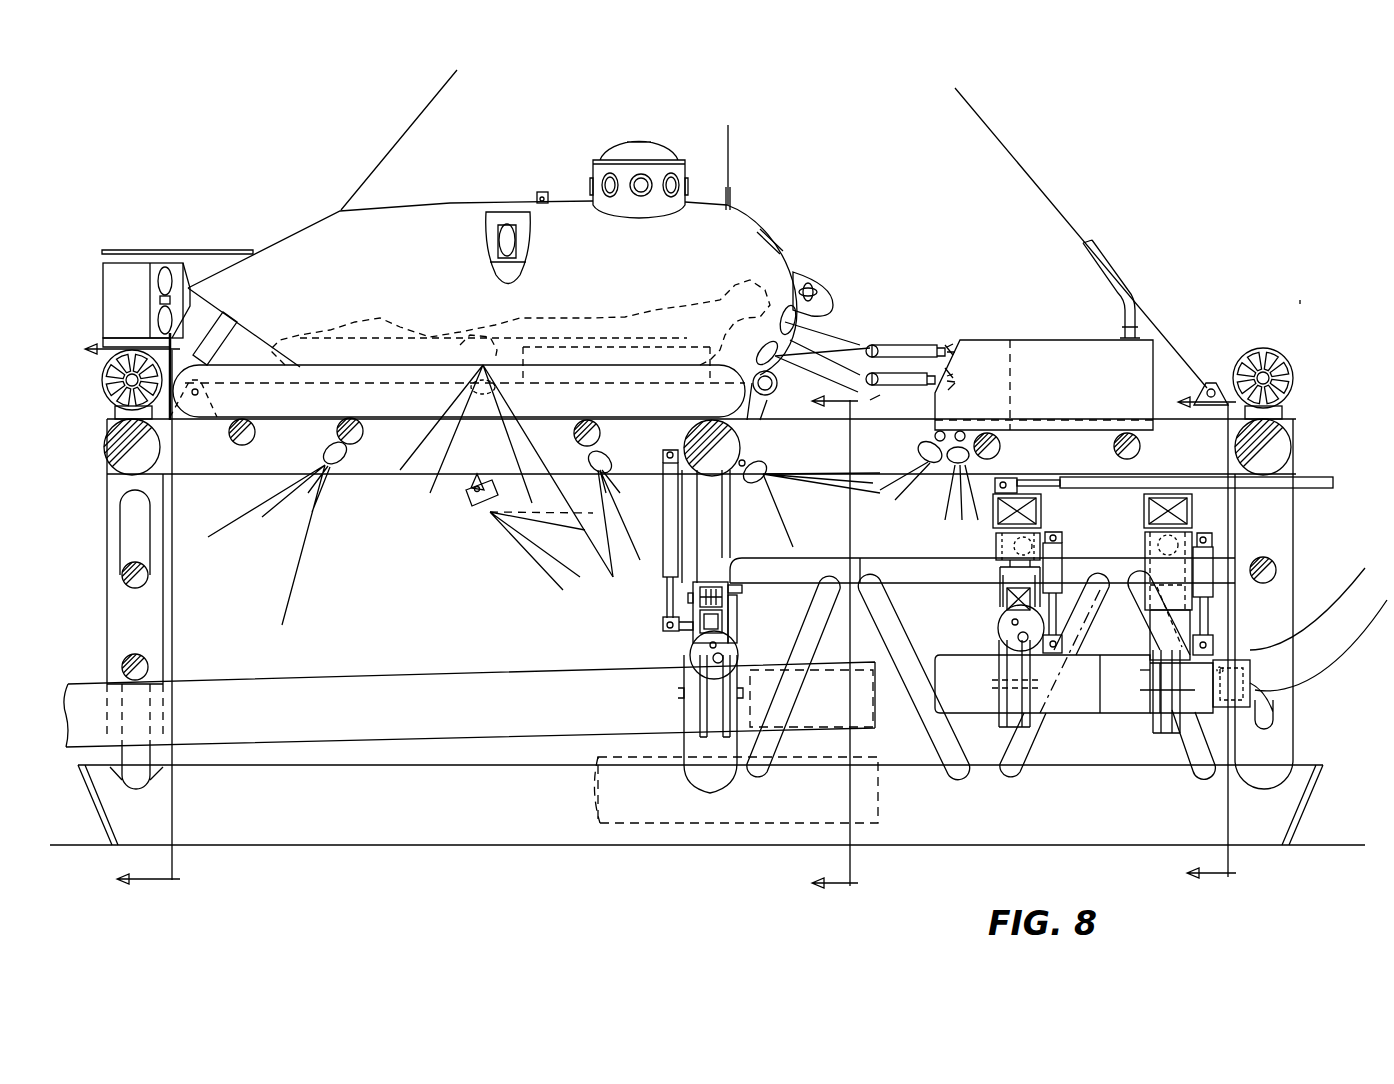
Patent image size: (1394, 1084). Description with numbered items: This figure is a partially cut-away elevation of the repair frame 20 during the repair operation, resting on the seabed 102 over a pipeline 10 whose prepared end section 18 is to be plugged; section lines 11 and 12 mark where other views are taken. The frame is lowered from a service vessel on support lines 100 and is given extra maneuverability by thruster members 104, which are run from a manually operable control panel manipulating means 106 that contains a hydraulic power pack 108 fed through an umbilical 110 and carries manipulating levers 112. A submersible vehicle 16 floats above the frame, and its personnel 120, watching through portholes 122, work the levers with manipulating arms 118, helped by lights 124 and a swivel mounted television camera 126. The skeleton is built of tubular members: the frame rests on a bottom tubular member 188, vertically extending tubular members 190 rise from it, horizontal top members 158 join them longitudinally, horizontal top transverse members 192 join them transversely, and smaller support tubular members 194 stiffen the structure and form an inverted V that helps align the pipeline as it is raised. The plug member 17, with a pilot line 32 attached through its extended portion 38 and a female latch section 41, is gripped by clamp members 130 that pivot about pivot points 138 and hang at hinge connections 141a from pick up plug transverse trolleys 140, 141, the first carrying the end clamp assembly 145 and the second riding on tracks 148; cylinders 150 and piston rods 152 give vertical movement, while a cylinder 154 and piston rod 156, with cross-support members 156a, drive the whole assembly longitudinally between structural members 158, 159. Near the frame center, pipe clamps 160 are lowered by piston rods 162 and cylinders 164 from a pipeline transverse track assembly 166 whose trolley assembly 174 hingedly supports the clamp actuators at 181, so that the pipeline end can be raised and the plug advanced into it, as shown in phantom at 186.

The pipeline 10 is at (318, 682).
The section line 11 is at (823, 647).
The section line 12 is at (119, 616).
The submersible vehicle 16 is at (447, 212).
The plug member 17 is at (1090, 720).
The prepared end section 18 is at (878, 730).
The repair frame 20 is at (1320, 376).
The pilot line 32 is at (1330, 630).
The extended portion 38 is at (1345, 690).
The female section of the latch 41 is at (1258, 680).
The support lines 100 is at (418, 122).
The seabed 102 is at (1330, 845).
The thruster members 104 is at (103, 384).
The control panel manipulating means 106 is at (980, 338).
The hydraulic power pack 108 is at (1065, 350).
The umbilical 110 is at (1125, 300).
The manipulating levers 112 is at (933, 350).
The manipulating arms 118 is at (885, 362).
The personnel 120 is at (388, 332).
The portholes 122 is at (815, 315).
The lights 124 is at (350, 457).
The swivel mounted television camera 126 is at (468, 512).
The clamp members 130 is at (1018, 728).
The pivot point 138 is at (1010, 690).
The pick up plug transverse trolley 140 is at (1150, 657).
The pick up plug transverse trolley 141 is at (1000, 612).
The hinge connections 141a is at (1010, 623).
The end clamp assembly 145 is at (1140, 672).
The tracks 148 is at (1005, 600).
The cylinders 150 is at (1062, 556).
The piston rods 152 is at (1063, 612).
The cylinder 154 is at (1085, 492).
The piston rod 156 is at (1032, 480).
The cross-support members 156a is at (993, 525).
The structural members 158 is at (878, 420).
The structural member 159 is at (862, 560).
The pipe clamps 160 is at (700, 715).
The piston rods 162 is at (668, 598).
The cylinders 164 is at (663, 533).
The pipeline transverse track assembly 166 is at (745, 630).
The pipeline transverse trolley assembly 174 is at (686, 646).
The hinge 181 is at (665, 620).
The phantom plug position 186 is at (830, 668).
The tubular member 188 is at (1095, 818).
The vertically extending tubular members 190 is at (165, 632).
The horizontal top transverse members 192 is at (160, 457).
The support tubular members 194 is at (150, 570).